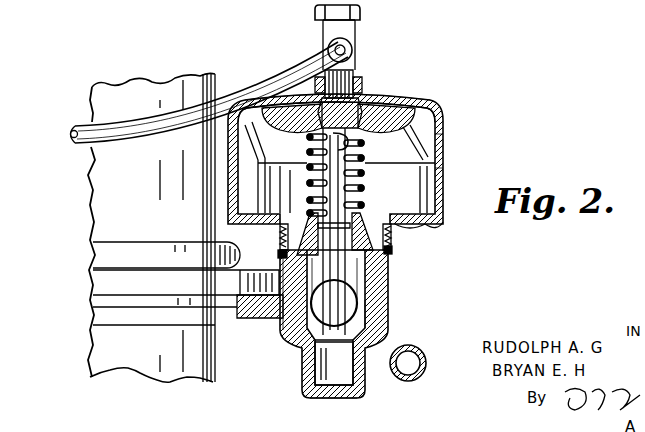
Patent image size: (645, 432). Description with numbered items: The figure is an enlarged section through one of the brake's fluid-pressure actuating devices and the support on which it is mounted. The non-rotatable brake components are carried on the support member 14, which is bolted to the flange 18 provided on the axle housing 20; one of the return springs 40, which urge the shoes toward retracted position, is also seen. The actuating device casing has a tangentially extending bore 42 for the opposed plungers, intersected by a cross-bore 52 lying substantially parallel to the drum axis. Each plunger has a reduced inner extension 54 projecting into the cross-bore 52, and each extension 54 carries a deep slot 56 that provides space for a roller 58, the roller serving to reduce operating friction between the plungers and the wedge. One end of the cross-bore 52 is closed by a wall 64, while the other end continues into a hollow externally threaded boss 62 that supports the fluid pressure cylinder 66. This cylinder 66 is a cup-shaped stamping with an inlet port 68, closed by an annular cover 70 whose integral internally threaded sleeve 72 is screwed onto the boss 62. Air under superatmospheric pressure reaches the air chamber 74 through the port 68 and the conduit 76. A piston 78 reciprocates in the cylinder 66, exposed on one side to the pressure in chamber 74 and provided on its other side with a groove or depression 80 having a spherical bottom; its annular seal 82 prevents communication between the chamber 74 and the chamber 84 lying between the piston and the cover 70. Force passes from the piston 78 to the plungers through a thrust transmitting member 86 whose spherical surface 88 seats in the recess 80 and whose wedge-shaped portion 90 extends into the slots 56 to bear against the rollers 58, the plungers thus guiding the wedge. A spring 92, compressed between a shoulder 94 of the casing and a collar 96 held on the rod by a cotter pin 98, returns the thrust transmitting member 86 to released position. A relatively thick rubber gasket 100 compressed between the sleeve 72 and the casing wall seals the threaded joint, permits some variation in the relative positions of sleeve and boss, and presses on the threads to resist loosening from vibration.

The support member 14 is at (258, 308).
The flange 18 is at (278, 257).
The axle housing 20 is at (106, 224).
The return spring 40 is at (426, 362).
The tangentially extending bore 42 is at (390, 297).
The cross-bore 52 is at (392, 290).
The inner extension 54 is at (316, 332).
The slot 56 is at (392, 319).
The roller 58 is at (362, 365).
The externally threaded boss 62 is at (392, 247).
The wall 64 is at (350, 394).
The fluid pressure cylinder 66 is at (443, 148).
The inlet port 68 is at (372, 78).
The annular cover 70 is at (446, 222).
The internally threaded sleeve 72 is at (282, 240).
The air chamber 74 is at (372, 100).
The conduit 76 is at (255, 86).
The piston 78 is at (438, 120).
The groove or depression 80 is at (325, 110).
The annular seal 82 is at (439, 133).
The chamber 84 is at (439, 175).
The thrust transmitting member 86 is at (392, 212).
The spherical surface 88 is at (366, 98).
The wedge-shaped portion 90 is at (328, 318).
The spring 92 is at (310, 187).
The shoulder 94 is at (390, 272).
The collar 96 is at (283, 115).
The cotter pin 98 is at (356, 147).
The rubber gasket 100 is at (240, 271).